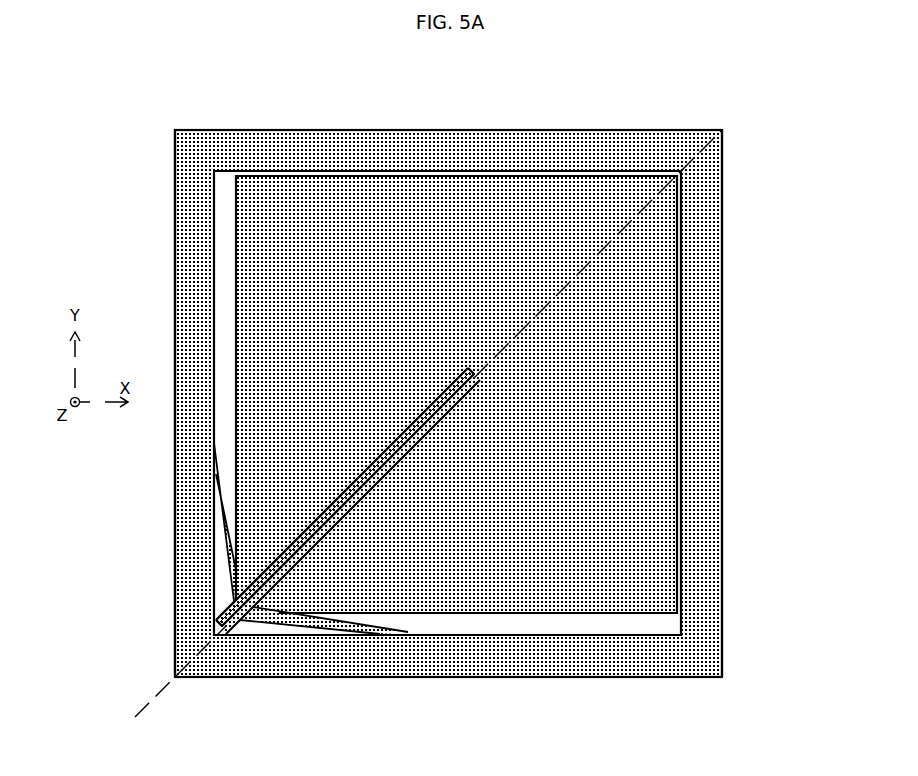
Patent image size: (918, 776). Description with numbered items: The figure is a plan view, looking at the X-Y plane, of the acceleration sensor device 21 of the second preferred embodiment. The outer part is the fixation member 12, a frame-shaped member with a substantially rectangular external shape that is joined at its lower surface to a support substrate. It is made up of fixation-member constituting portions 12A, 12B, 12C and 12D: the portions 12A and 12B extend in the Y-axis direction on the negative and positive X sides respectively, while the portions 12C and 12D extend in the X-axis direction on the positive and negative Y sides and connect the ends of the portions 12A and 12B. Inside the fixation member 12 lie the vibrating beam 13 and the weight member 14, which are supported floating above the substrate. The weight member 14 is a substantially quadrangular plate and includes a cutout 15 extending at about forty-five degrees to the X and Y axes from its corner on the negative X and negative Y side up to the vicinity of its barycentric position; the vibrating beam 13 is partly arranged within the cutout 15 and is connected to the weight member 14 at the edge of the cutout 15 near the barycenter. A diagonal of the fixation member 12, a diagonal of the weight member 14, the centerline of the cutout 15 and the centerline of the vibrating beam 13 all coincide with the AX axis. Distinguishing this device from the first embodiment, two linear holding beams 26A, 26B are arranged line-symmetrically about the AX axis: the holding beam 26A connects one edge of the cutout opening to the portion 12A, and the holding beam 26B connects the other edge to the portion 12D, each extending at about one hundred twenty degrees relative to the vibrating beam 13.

The fixation member 12 is at (174, 129).
The fixation-member constituting portion 12A is at (174, 247).
The fixation-member constituting portion 12B is at (722, 252).
The fixation-member constituting portion 12C is at (580, 130).
The fixation-member constituting portion 12D is at (593, 678).
The vibrating beam 13 is at (220, 619).
The weight member 14 is at (466, 590).
The cutout 15 is at (249, 615).
The acceleration sensor device 21 is at (783, 121).
The holding beam 26A is at (224, 530).
The holding beam 26B is at (335, 623).
The AX axis AX is at (722, 131).